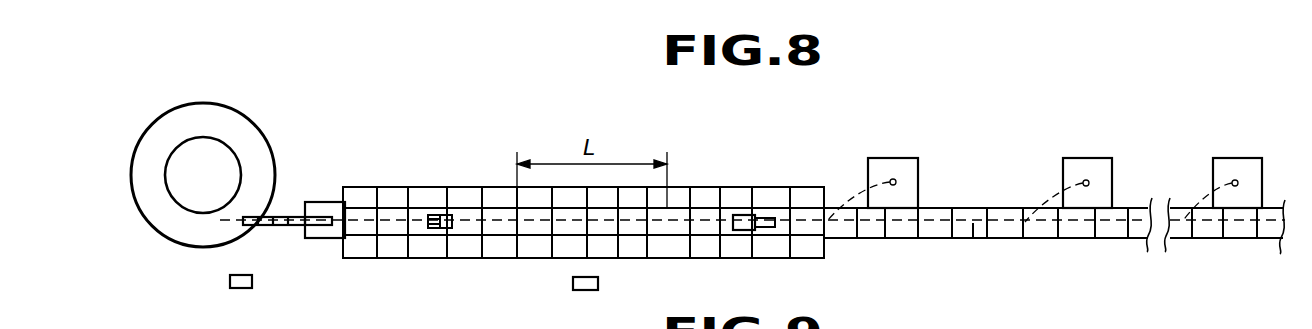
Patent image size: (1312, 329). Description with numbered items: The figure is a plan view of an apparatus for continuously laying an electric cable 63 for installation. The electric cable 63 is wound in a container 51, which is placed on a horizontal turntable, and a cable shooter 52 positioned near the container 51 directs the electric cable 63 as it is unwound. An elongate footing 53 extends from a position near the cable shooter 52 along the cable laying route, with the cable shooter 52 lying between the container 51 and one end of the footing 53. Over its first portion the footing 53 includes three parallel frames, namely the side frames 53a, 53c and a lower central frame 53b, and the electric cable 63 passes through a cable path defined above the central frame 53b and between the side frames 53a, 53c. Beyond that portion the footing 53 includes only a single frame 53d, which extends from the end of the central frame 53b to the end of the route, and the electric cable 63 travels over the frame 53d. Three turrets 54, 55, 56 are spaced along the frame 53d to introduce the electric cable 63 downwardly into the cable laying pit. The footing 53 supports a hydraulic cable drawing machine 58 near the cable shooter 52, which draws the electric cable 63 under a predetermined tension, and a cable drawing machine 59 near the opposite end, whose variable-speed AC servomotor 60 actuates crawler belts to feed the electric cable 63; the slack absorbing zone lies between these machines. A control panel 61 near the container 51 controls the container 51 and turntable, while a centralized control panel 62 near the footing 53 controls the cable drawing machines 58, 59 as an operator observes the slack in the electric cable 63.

The container 51 is at (243, 110).
The cable shooter 52 is at (330, 202).
The footing 53 is at (710, 187).
The side frame 53a is at (395, 198).
The central frame 53b is at (358, 228).
The side frame 53c is at (422, 248).
The frame 53d is at (1078, 238).
The turret 54 is at (918, 169).
The turret 55 is at (1063, 173).
The turret 56 is at (1213, 172).
The hydraulic cable drawing machine 58 is at (448, 215).
The cable drawing machine 59 is at (745, 215).
The variable-speed AC servomotor 60 is at (775, 218).
The control panel 61 is at (240, 289).
The centralized control panel 62 is at (583, 290).
The electric cable 63 is at (975, 223).